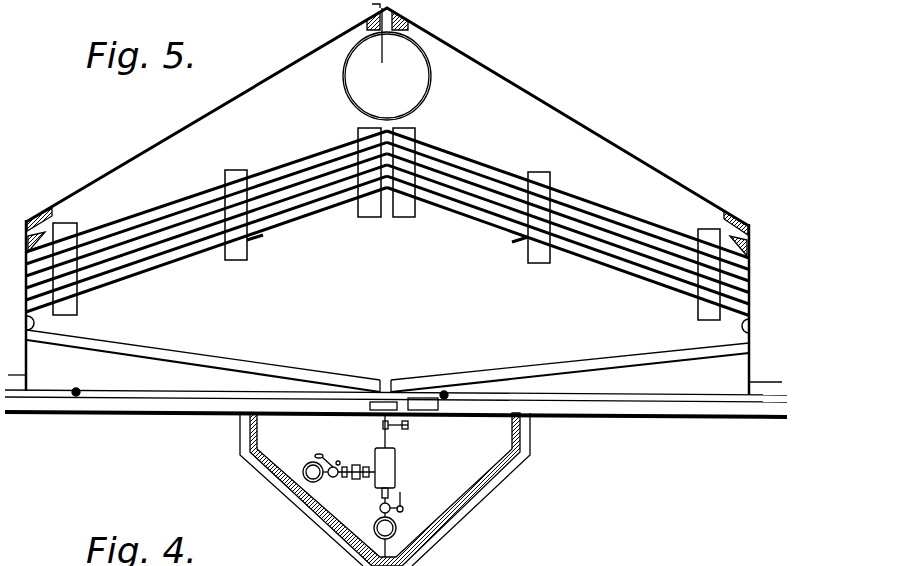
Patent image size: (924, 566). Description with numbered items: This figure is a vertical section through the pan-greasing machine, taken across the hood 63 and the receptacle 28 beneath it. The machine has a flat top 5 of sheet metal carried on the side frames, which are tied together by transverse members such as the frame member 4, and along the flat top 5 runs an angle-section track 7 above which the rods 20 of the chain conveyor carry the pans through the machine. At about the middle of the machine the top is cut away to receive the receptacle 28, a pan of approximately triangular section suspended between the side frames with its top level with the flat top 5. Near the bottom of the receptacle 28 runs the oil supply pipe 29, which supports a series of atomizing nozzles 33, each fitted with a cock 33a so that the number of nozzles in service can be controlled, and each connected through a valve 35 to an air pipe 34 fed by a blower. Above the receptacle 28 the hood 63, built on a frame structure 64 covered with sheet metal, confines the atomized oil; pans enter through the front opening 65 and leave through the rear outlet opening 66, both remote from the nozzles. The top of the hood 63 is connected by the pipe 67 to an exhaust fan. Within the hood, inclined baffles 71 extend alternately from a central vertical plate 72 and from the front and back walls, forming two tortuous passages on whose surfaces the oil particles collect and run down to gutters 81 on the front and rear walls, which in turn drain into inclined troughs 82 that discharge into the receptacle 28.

The transverse frame member 4 is at (367, 11).
The flat top 5 is at (172, 415).
The track 7 is at (135, 404).
The rods 20 is at (77, 392).
The receptacle 28 is at (467, 500).
The oil supply pipe 29 is at (395, 524).
The atomizing nozzle 33 is at (396, 462).
The cock 33a is at (380, 508).
The air pipe 34 is at (310, 462).
The valve 35 is at (338, 466).
The hood 63 is at (569, 121).
The frame structure 64 is at (368, 30).
The opening 65 is at (749, 362).
The outlet opening 66 is at (26, 362).
The pipe 67 is at (416, 97).
The baffles 71 is at (489, 173).
The central vertical plate 72 is at (388, 130).
The gutter 81 is at (40, 325).
The trough 82 is at (182, 361).